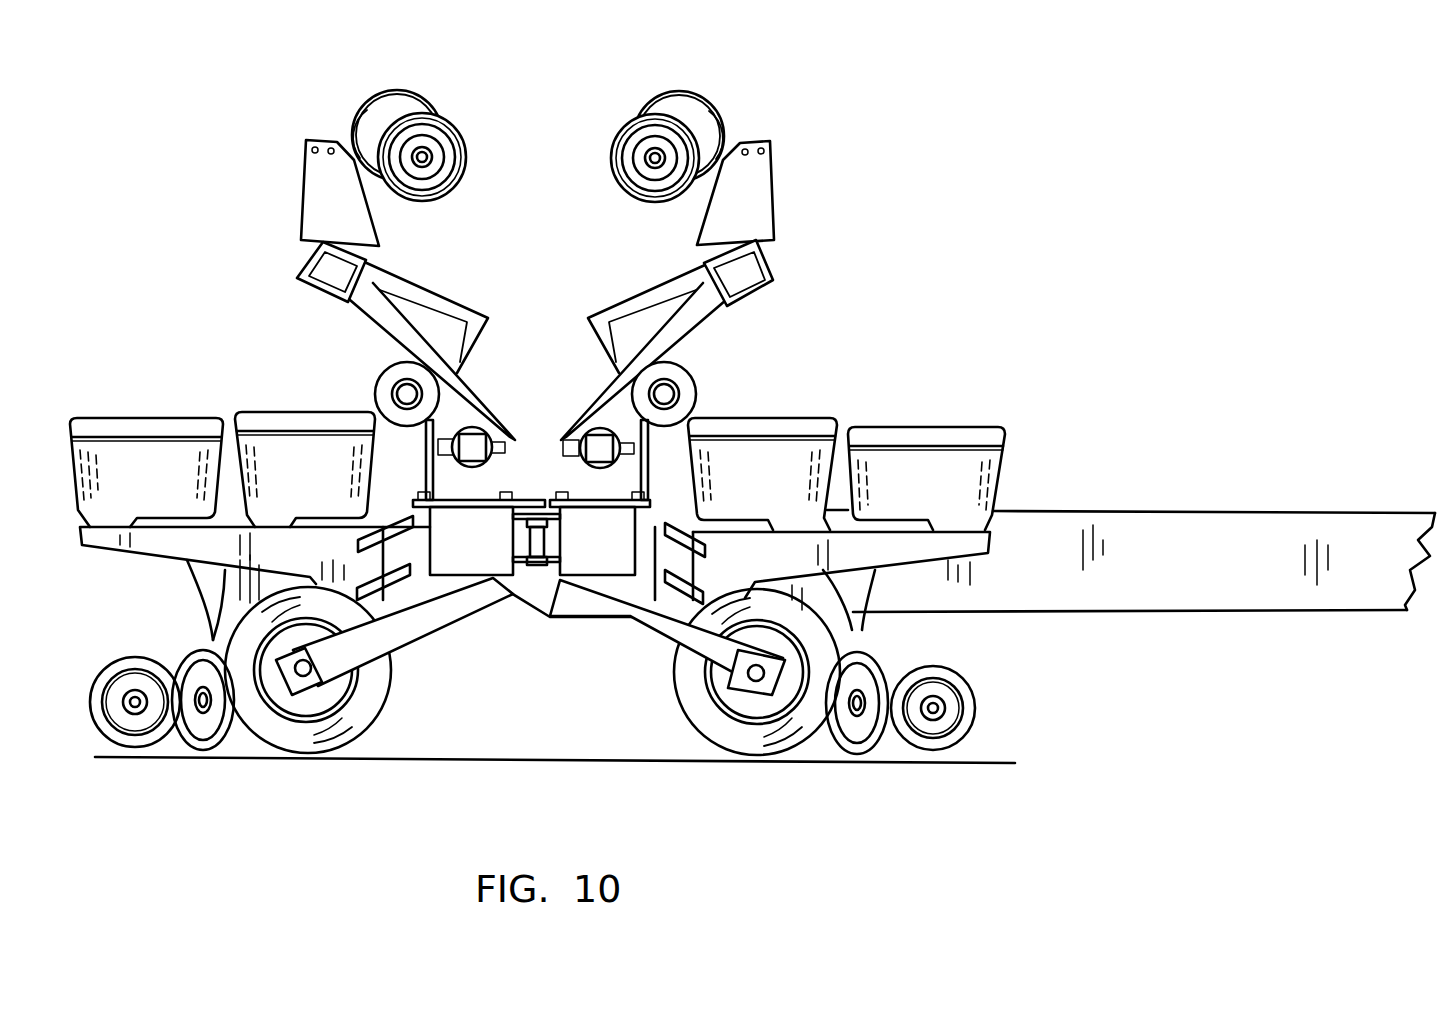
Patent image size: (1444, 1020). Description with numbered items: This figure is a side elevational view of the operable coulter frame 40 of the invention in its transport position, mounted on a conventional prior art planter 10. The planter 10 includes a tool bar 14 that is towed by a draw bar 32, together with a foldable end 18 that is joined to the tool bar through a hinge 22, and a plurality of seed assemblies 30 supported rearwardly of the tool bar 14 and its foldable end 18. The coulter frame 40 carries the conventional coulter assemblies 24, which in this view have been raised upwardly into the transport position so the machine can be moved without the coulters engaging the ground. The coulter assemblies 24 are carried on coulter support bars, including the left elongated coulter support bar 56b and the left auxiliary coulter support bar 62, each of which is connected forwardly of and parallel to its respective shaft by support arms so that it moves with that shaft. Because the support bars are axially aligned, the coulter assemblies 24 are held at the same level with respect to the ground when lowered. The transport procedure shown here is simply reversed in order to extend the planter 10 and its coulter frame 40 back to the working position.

The planter 10 is at (153, 347).
The operable coulter frame 40 is at (980, 122).
The coulter assemblies 24 is at (308, 195).
The left elongated coulter support bar 56b is at (316, 292).
The left auxiliary coulter support bar 62 is at (764, 300).
The hinge 22 is at (536, 500).
The tool bar 14 is at (463, 560).
The foldable end 18 is at (602, 553).
The seed assemblies 30 is at (955, 427).
The draw bar 32 is at (1130, 537).